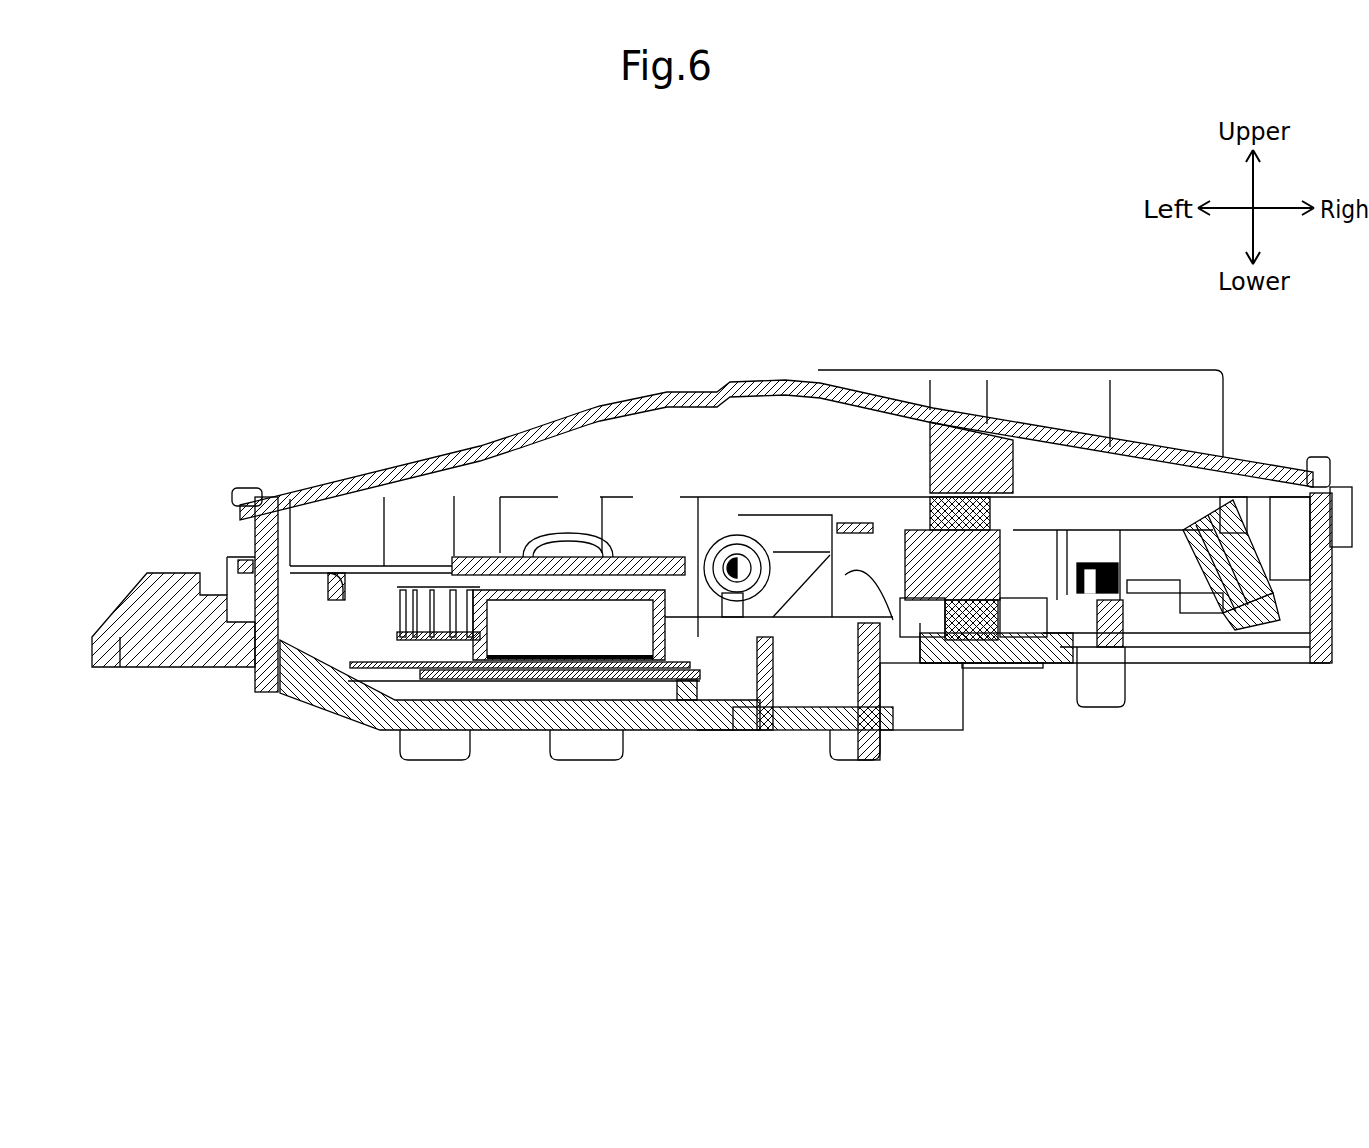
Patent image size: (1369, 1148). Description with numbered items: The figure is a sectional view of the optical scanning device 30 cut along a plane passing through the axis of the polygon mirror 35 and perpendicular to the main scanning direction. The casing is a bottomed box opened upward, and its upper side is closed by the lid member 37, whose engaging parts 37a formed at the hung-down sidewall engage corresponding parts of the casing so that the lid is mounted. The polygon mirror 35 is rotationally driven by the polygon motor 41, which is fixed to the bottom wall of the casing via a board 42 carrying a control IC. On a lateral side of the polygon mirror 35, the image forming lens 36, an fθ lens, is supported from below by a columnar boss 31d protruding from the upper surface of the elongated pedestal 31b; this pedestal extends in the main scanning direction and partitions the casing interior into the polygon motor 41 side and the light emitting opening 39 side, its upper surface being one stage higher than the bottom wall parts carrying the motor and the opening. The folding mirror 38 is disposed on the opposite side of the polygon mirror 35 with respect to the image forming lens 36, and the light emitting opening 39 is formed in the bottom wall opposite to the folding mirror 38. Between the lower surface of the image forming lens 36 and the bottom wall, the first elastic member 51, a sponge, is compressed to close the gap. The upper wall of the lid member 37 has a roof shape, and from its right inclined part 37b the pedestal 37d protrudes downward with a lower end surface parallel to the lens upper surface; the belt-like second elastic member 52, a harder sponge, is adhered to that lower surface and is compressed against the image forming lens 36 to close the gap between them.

The optical scanning device 30 is at (427, 293).
The elongated pedestal 31b is at (203, 637).
The columnar boss 31d is at (845, 575).
The polygon mirror 35 is at (549, 558).
The image forming lens 36 is at (952, 563).
The lid member 37 is at (388, 444).
The engaging part 37a is at (247, 568).
The right inclined part 37b is at (866, 398).
The pedestal 37d is at (988, 470).
The folding mirror 38 is at (1230, 577).
The light emitting opening 39 is at (1155, 617).
The polygon motor 41 is at (475, 635).
The board 42 is at (673, 680).
The first elastic member 51 is at (977, 600).
The second elastic member 52 is at (960, 512).